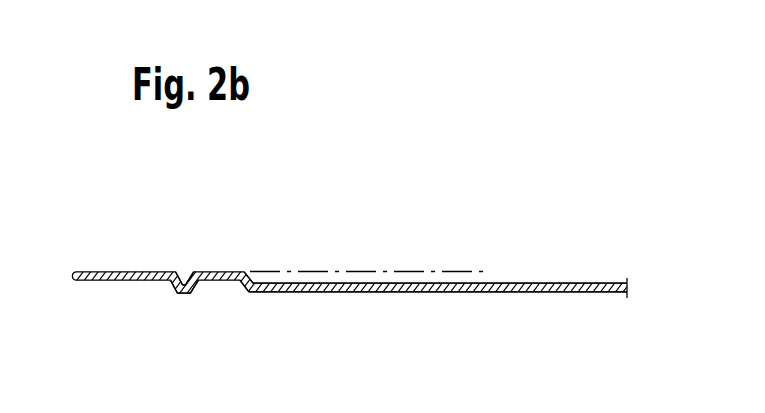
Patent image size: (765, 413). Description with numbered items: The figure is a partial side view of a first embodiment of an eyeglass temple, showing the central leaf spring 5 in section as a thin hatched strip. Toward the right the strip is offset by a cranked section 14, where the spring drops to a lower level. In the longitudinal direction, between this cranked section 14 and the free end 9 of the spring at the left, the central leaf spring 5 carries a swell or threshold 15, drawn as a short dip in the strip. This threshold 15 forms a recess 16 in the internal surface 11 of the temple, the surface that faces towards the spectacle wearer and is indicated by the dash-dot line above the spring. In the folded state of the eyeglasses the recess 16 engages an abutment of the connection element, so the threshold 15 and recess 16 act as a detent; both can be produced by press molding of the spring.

The free end 9 is at (84, 271).
The recess 16 is at (183, 271).
The threshold 15 is at (183, 294).
The cranked section 14 is at (242, 293).
The central leaf spring 5 is at (363, 288).
The internal surface 11 is at (451, 282).